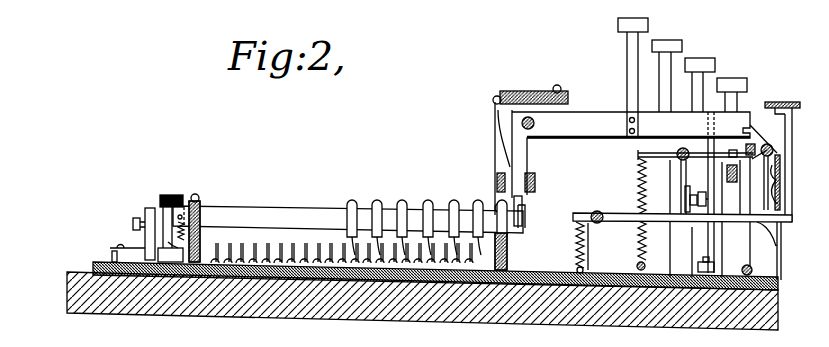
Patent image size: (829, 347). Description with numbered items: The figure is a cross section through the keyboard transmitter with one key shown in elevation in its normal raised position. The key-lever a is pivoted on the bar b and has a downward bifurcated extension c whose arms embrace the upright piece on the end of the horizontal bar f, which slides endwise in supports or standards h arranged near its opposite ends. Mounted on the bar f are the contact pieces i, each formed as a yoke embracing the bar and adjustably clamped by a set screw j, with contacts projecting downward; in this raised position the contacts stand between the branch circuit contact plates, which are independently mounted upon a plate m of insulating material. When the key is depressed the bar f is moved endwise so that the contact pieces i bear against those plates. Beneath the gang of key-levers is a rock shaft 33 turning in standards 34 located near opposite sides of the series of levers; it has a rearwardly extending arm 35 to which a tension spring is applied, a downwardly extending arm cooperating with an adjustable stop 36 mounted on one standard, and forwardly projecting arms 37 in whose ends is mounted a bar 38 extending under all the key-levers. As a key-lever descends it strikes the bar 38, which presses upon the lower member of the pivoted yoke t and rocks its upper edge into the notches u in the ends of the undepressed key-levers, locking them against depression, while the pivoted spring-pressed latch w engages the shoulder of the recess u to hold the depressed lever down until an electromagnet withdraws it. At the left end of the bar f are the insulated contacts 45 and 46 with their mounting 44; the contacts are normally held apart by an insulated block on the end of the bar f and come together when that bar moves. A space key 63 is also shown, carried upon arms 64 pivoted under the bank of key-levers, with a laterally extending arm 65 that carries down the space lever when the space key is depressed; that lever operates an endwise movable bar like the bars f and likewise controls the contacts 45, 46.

The key-lever a is at (585, 118).
The bar b is at (533, 129).
The bifurcated extension c is at (537, 172).
The horizontal bar f is at (292, 204).
The supports or standards h is at (201, 203).
The contact pieces i is at (349, 206).
The set screw j is at (375, 205).
The latch bracket l is at (525, 213).
The plate of insulating material m is at (93, 266).
The pivoted yoke t is at (763, 158).
The notch u is at (742, 128).
The latch w is at (744, 184).
The rock shaft 33 is at (677, 148).
The standards 34 is at (680, 190).
The rearwardly extending arm 35 is at (647, 168).
The adjustable stop 36 is at (683, 200).
The forwardly projecting arms 37 is at (703, 205).
The bar 38 is at (729, 153).
The lever 44 is at (110, 248).
The insulated contact 45 is at (145, 212).
The insulated contact 46 is at (163, 210).
The space key 63 is at (781, 102).
The arms 64 is at (630, 213).
The laterally extending arm 65 is at (709, 257).